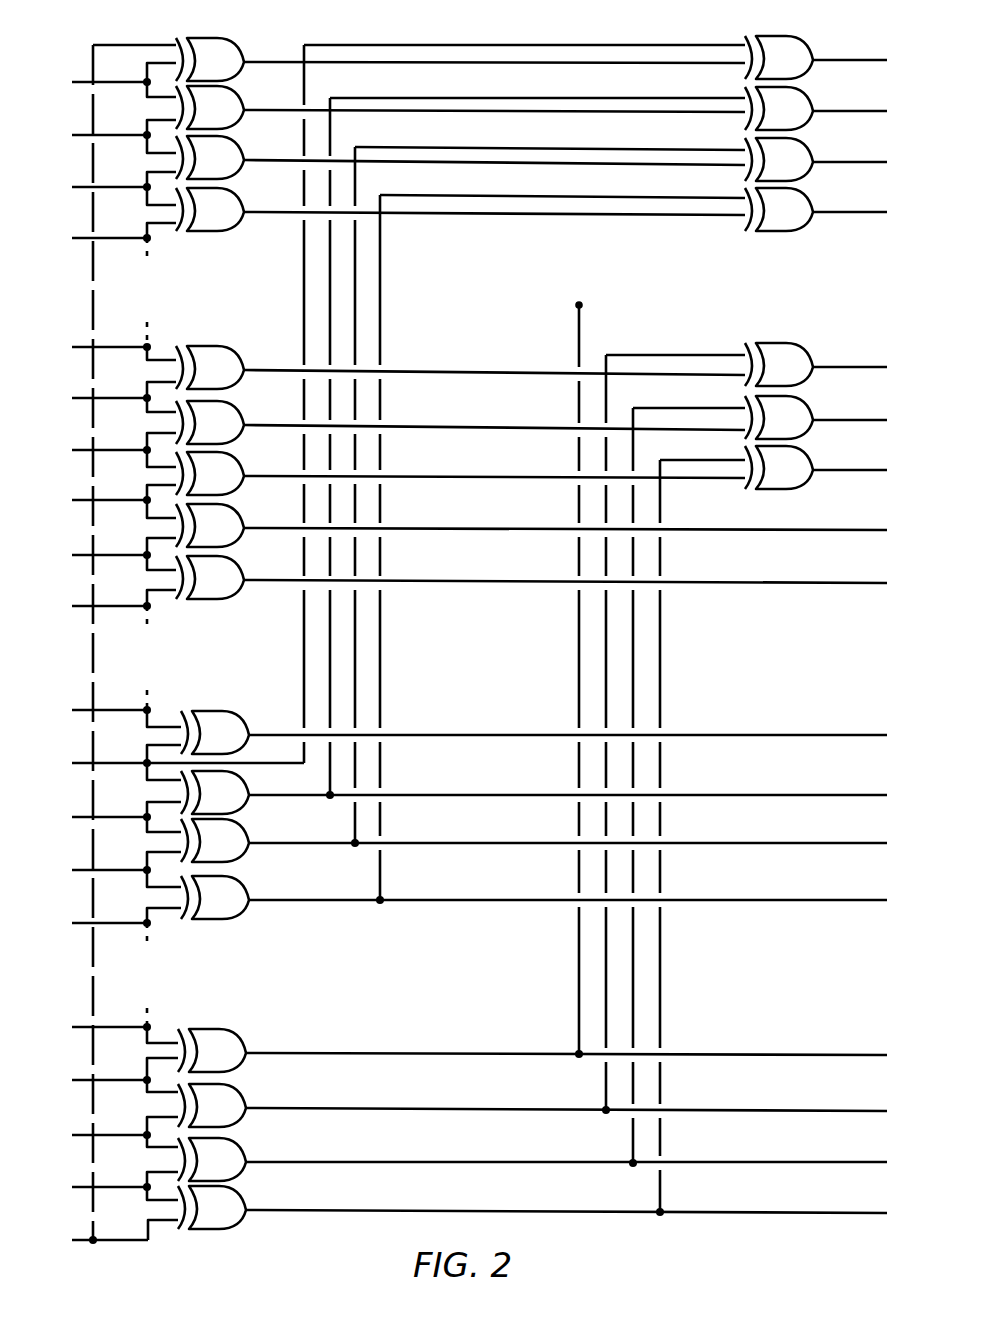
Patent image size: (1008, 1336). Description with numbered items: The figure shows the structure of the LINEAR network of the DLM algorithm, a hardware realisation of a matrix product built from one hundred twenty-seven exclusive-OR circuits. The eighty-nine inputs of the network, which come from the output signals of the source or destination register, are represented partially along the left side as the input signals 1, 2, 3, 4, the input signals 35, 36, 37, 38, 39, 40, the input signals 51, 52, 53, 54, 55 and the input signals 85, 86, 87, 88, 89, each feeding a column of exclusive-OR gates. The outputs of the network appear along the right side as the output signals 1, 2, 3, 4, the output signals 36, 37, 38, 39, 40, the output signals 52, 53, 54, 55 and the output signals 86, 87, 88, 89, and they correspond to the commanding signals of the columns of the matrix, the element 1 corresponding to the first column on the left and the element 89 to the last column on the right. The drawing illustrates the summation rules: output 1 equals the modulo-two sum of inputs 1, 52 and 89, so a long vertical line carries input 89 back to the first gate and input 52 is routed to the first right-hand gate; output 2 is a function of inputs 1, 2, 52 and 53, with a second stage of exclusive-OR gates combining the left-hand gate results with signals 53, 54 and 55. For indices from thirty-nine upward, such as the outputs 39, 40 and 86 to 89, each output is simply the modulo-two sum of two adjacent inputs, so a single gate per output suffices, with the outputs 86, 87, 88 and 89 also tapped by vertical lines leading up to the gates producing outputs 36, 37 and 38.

The input/output signal 1 is at (472, 50).
The input/output signal 2 is at (469, 103).
The input/output signal 3 is at (469, 155).
The input/output signal 4 is at (469, 209).
The input signal 35 is at (100, 331).
The input/output signal 36 is at (474, 363).
The input/output signal 37 is at (476, 416).
The input/output signal 38 is at (476, 468).
The input/output signal 39 is at (480, 524).
The input/output signal 40 is at (476, 577).
The input signal 51 is at (100, 692).
The input/output signal 52 is at (476, 731).
The input/output signal 53 is at (476, 789).
The input/output signal 54 is at (474, 840).
The input/output signal 55 is at (476, 895).
The input signal 85 is at (100, 1012).
The input/output signal 86 is at (479, 1050).
The input/output signal 87 is at (479, 1103).
The input/output signal 88 is at (478, 1154).
The input/output signal 89 is at (478, 1208).